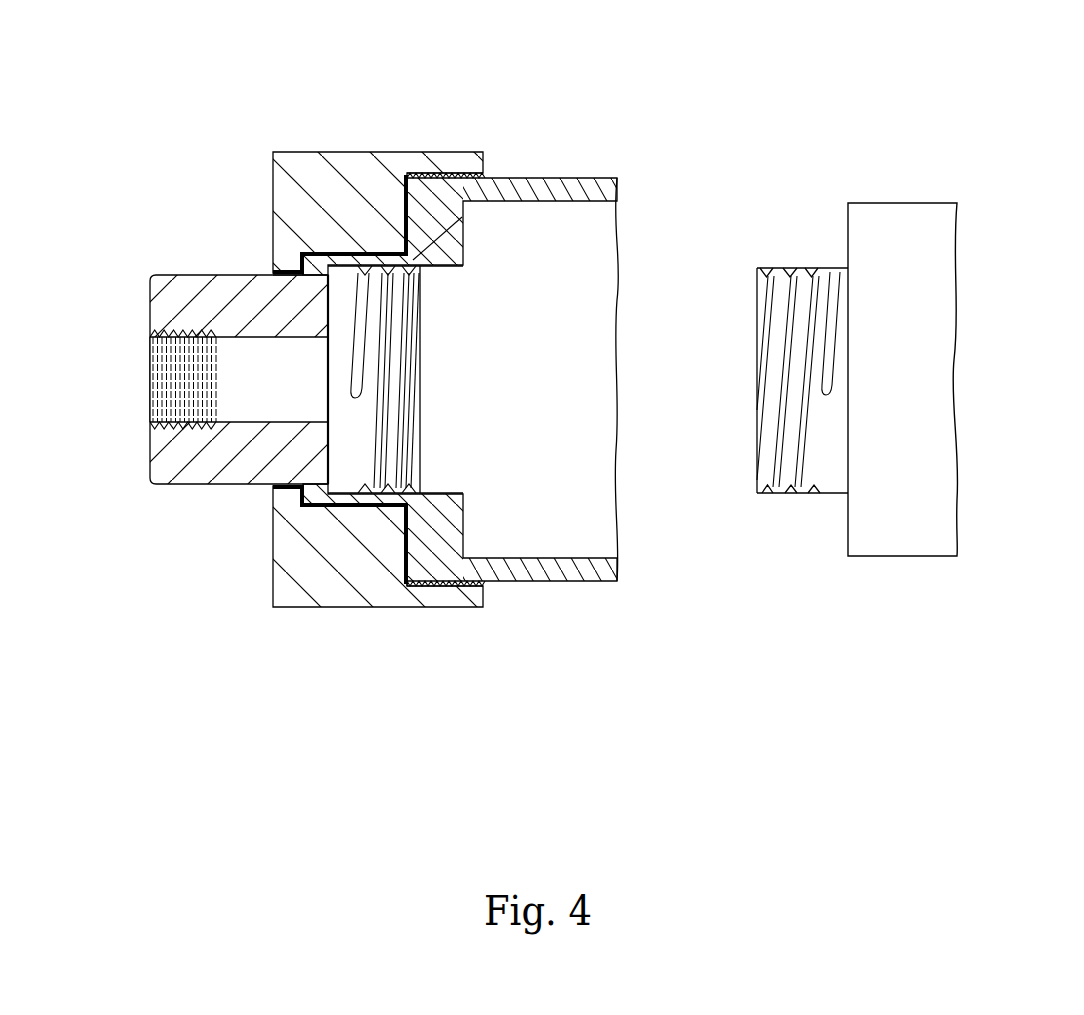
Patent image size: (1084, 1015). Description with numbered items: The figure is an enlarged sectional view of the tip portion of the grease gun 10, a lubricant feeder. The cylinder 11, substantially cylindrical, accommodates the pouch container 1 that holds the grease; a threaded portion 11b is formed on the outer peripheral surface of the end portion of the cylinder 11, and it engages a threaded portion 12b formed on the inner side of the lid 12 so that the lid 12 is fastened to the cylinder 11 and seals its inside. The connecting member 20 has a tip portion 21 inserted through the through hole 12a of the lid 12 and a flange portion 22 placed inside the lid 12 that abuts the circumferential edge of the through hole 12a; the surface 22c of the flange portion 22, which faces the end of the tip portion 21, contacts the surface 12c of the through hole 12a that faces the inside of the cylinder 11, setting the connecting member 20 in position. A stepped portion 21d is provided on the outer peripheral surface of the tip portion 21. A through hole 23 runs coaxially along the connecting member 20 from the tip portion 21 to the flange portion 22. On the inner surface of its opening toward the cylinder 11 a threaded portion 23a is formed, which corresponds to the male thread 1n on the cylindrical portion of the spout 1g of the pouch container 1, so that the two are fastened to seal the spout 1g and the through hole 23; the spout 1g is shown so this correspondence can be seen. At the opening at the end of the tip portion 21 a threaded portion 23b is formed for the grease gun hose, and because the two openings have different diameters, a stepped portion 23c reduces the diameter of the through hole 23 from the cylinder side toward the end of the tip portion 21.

The pouch container 1 is at (904, 558).
The male thread 1n is at (790, 495).
The spout 1g is at (802, 456).
The grease gun 10 is at (624, 124).
The cylinder 11 is at (561, 583).
The threaded portion 11b is at (440, 587).
The lid 12 is at (293, 609).
The through hole 12a is at (284, 487).
The threaded portion 12b is at (459, 186).
The surface 12c is at (412, 528).
The connecting member 20 is at (135, 287).
The tip portion 21 is at (149, 489).
The stepped portion 21d is at (300, 270).
The flange portion 22 is at (367, 325).
The surface 22c is at (404, 236).
The through hole 23 is at (260, 421).
The threaded portion 23a is at (423, 361).
The threaded portion 23b is at (178, 403).
The stepped portion 23c is at (331, 445).